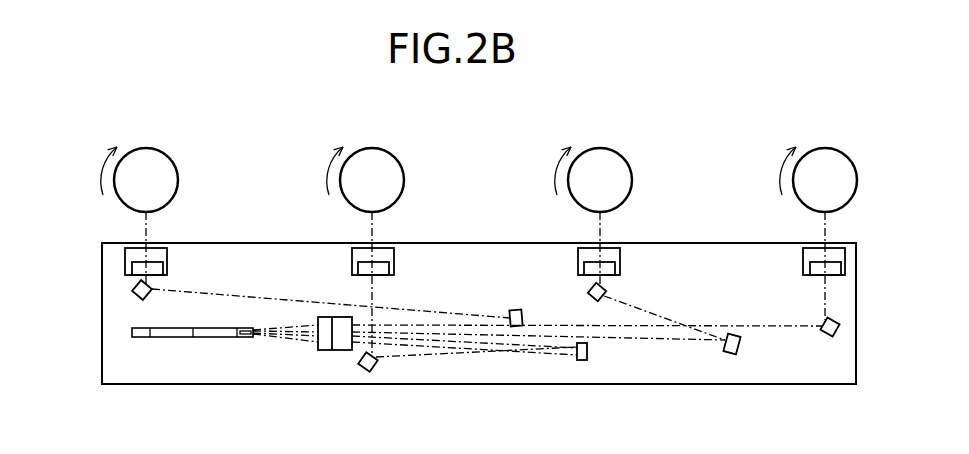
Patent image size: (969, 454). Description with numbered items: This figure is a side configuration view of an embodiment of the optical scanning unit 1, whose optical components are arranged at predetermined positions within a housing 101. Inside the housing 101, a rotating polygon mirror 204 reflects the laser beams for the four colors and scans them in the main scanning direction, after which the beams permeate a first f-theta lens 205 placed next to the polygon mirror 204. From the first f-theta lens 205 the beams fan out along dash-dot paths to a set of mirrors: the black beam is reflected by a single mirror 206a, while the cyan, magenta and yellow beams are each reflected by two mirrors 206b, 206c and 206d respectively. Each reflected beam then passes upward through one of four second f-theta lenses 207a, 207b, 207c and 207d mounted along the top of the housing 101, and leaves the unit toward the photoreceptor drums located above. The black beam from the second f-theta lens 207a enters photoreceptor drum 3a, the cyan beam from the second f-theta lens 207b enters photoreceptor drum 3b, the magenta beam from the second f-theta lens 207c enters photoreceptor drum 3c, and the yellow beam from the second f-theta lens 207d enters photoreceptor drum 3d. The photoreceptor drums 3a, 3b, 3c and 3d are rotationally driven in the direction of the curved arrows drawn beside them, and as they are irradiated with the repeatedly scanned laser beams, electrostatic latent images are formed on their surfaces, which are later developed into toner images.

The image forming apparatus 1 is at (716, 210).
The housing 101 is at (670, 243).
The photoreceptor drum 3a is at (825, 148).
The photoreceptor drum 3b is at (600, 148).
The photoreceptor drum 3c is at (372, 148).
The photoreceptor drum 3d is at (147, 148).
The polygon mirror 204 is at (180, 338).
The first f-theta lens 205 is at (335, 350).
The mirror 206a is at (830, 337).
The mirrors 206b is at (588, 296).
The mirrors 206c is at (365, 369).
The mirrors 206d is at (133, 292).
The second f-theta lens 207a is at (803, 260).
The second f-theta lens 207b is at (578, 260).
The second f-theta lens 207c is at (352, 260).
The second f-theta lens 207d is at (125, 258).